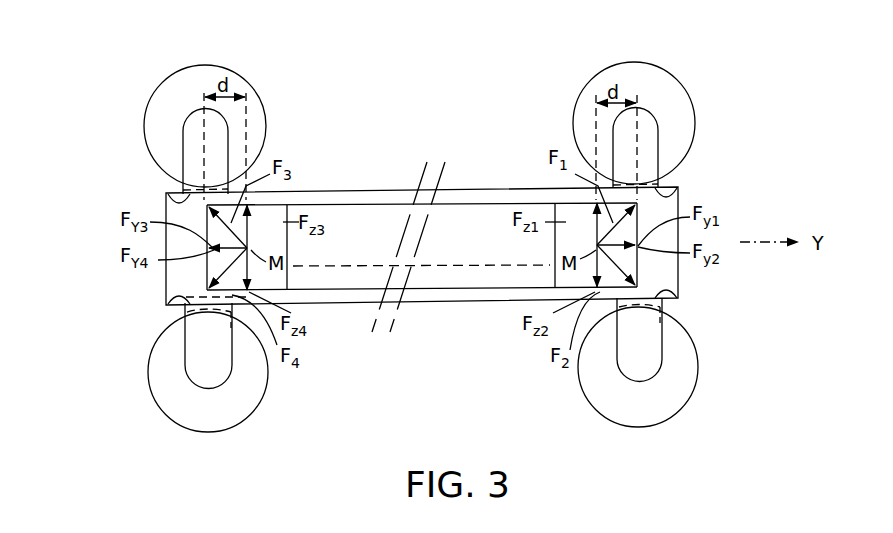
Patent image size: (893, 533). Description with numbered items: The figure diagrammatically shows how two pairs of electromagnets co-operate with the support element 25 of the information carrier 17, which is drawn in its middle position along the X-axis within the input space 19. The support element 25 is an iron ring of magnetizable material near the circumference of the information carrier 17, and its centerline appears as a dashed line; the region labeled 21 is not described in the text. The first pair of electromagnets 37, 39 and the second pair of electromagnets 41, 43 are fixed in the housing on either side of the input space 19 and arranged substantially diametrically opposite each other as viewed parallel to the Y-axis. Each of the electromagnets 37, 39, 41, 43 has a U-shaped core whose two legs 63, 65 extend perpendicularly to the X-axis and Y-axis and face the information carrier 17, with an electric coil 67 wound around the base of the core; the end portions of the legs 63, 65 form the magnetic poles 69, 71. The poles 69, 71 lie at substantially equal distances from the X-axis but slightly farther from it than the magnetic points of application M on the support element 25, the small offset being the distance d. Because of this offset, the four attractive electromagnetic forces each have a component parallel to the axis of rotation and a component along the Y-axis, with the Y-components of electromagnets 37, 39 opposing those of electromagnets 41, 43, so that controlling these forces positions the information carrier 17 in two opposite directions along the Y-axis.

The information carrier 17 is at (352, 212).
The input space 19 is at (170, 281).
The lower flange of cross beam 21 is at (338, 268).
The support element 25 is at (290, 243).
The electromagnet of first pair 37 is at (710, 94).
The electromagnet of first pair 39 is at (705, 409).
The electromagnet of second pair 41 is at (122, 96).
The electromagnet of second pair 43 is at (142, 412).
The leg 63 is at (422, 248).
The leg 65 is at (190, 147).
The electric coil 67 is at (178, 80).
The magnetic pole 69 is at (426, 252).
The magnetic pole 71 is at (167, 197).